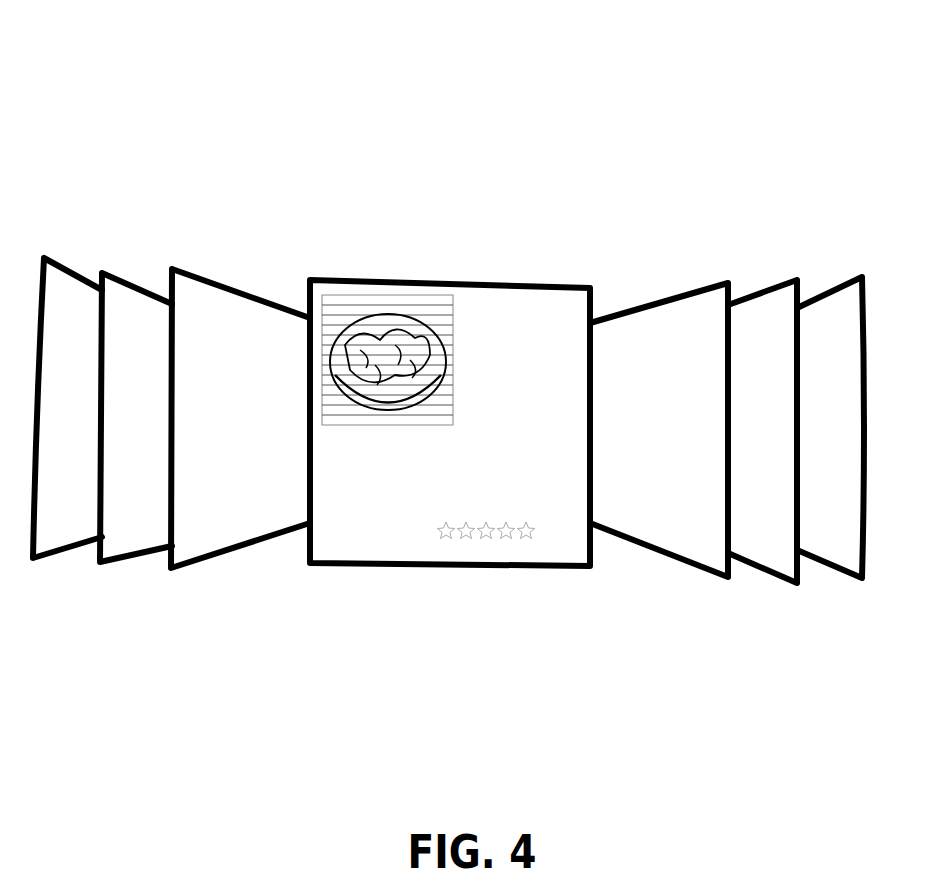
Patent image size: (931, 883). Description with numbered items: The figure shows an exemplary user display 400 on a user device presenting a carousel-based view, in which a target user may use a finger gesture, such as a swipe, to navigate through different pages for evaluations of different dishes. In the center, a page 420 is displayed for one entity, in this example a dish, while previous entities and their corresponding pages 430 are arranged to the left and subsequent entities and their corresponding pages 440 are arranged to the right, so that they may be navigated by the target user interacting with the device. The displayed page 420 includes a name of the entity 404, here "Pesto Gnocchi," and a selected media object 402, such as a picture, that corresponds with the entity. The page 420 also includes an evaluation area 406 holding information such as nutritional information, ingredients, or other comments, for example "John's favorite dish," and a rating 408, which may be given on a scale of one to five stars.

The user display 400 is at (380, 110).
The selected media object 402 is at (380, 318).
The name of the entity 404 is at (520, 335).
The evaluation area 406 is at (380, 477).
The rating 408 is at (485, 552).
The page 420 is at (465, 282).
The pages of previous entities 430 is at (47, 248).
The pages of subsequent entities 440 is at (836, 248).